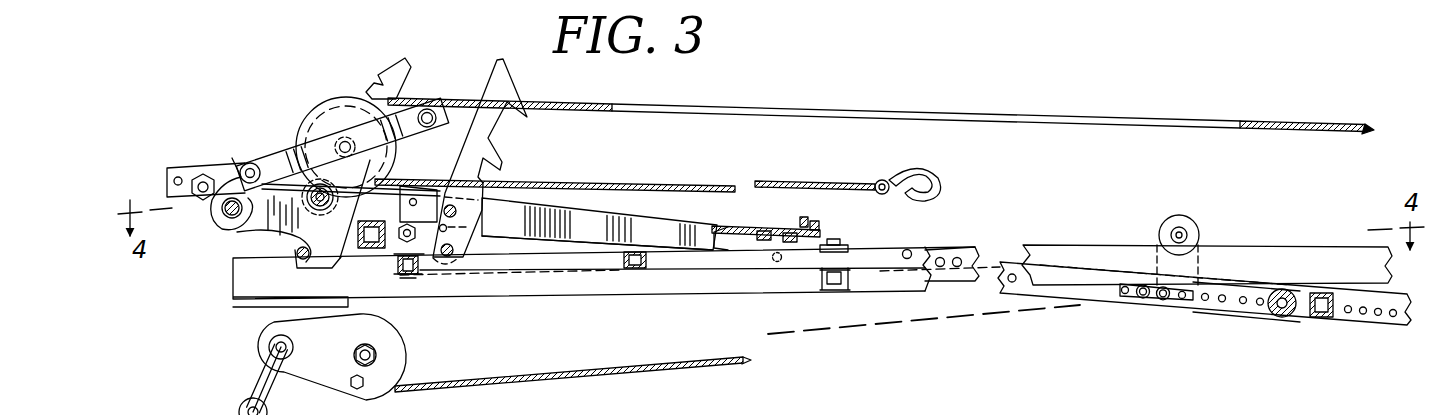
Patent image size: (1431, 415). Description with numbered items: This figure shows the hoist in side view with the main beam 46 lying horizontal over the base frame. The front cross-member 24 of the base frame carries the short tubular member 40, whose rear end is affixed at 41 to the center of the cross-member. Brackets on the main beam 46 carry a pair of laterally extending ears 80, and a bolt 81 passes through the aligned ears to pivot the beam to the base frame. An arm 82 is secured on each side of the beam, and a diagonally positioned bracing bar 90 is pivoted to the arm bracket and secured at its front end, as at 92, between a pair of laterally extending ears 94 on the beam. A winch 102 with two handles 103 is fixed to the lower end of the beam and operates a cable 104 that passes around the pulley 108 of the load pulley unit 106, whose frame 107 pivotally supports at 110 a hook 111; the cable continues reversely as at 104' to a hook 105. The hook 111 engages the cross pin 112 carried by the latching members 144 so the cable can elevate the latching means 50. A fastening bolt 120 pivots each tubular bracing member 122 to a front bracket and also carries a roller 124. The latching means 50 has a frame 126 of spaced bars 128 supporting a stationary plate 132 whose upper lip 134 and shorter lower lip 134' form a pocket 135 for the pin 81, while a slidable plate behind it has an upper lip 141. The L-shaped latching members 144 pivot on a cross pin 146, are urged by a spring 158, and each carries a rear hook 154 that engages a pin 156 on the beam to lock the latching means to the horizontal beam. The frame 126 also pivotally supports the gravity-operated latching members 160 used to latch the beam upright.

The front cross-member 24 is at (1322, 294).
The short tubular member 40 is at (1400, 322).
The affixing point of short tubular member 41 is at (1345, 318).
The main beam 46 is at (642, 300).
The latching means 50 is at (540, 198).
The laterally extending ears 80 is at (420, 280).
The bolt 81 is at (386, 250).
The arm 82 is at (420, 266).
The bracing bar 90 is at (636, 270).
The securing point of bracing bar 92 is at (847, 224).
The laterally extending ears 94 is at (852, 245).
The winch 102 is at (406, 346).
The handle 103 is at (268, 412).
The cable 104 is at (881, 240).
The reverse run of cable 104' is at (625, 169).
The hook 105 is at (924, 181).
The load pulley unit 106 is at (310, 108).
The pulley frame 107 is at (322, 140).
The pulley 108 is at (324, 98).
The pivot of hook 110 is at (250, 168).
The hook 111 is at (216, 224).
The cross pin 112 is at (224, 208).
The fastening bolt 120 is at (1283, 292).
The tubular bracing member 122 is at (1066, 300).
The roller 124 is at (1280, 318).
The frame 126 is at (592, 206).
The spaced bars 128 is at (650, 216).
The stationary plate 132 is at (736, 224).
The upper lip 134 is at (766, 221).
The lower lip 134' is at (842, 189).
The pocket 135 is at (820, 212).
The upper lip 141 is at (727, 250).
The latching members 144 is at (388, 62).
The cross pin 146 is at (300, 166).
The hook 154 is at (297, 254).
The pin 156 is at (292, 246).
The spring 158 is at (400, 192).
The latching members 160 is at (525, 46).